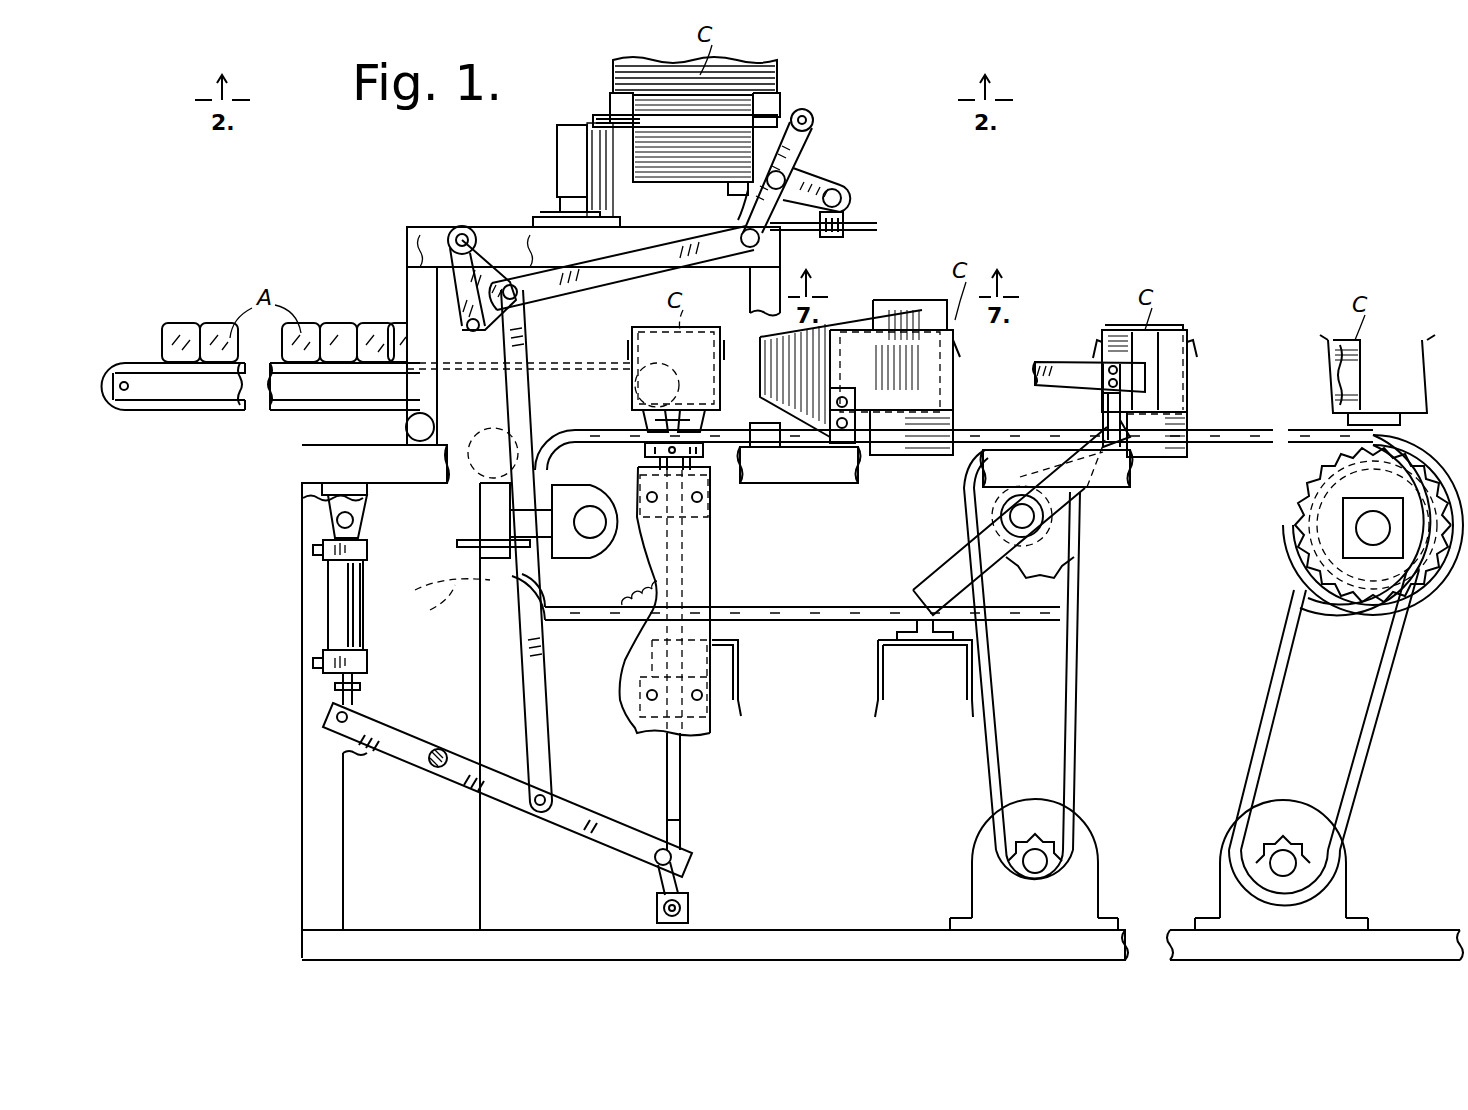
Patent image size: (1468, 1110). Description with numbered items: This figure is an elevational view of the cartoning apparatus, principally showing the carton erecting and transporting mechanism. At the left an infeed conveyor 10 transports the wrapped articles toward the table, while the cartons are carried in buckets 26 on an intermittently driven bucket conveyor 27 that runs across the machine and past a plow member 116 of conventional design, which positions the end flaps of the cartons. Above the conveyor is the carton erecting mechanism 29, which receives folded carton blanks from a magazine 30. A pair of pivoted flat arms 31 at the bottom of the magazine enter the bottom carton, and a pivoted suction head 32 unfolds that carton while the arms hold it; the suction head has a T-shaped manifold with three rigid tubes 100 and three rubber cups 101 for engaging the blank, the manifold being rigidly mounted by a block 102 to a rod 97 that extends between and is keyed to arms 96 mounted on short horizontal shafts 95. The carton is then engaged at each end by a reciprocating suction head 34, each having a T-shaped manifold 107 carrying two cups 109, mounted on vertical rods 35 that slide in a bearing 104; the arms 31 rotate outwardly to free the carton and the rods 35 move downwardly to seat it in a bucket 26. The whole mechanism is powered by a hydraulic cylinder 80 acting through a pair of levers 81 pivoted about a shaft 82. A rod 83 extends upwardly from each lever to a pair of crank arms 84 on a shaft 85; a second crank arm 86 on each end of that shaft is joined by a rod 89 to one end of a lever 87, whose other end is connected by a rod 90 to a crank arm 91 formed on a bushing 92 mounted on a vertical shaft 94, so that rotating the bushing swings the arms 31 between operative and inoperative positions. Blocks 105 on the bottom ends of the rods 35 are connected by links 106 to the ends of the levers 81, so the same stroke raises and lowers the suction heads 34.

The infeed conveyor 10 is at (148, 364).
The bucket 26 is at (700, 335).
The bucket conveyor 27 is at (1010, 422).
The carton erecting mechanism 29 is at (814, 119).
The magazine 30 is at (770, 96).
The pivoted flat arms 31 is at (686, 182).
The pivoted suction head 32 is at (812, 232).
The reciprocating suction head 34 is at (705, 465).
The vertical rods 35 is at (682, 795).
The hydraulic cylinder 80 is at (330, 600).
The levers 81 is at (397, 703).
The shaft 82 is at (436, 768).
The rod 83 is at (520, 352).
The crank arms 84 is at (504, 278).
The shaft 85 is at (466, 228).
The second crank arm 86 is at (468, 278).
The lever 87 is at (790, 150).
The rod 89 is at (598, 282).
The rods 90 is at (703, 112).
The crank arms 91 is at (585, 145).
The bushings 92 is at (570, 165).
The vertical shafts 94 is at (582, 117).
The short horizontal shafts 95 is at (782, 178).
The arms 96 is at (803, 195).
The rod 97 is at (842, 198).
The rigid tubes 100 is at (742, 238).
The rubber cups 101 is at (742, 192).
The block 102 is at (845, 222).
The bearing 104 is at (700, 518).
The blocks 105 is at (692, 912).
The links 106 is at (656, 870).
The T-shaped manifold 107 is at (644, 450).
The cups 109 is at (680, 405).
The plow member 116 is at (816, 342).